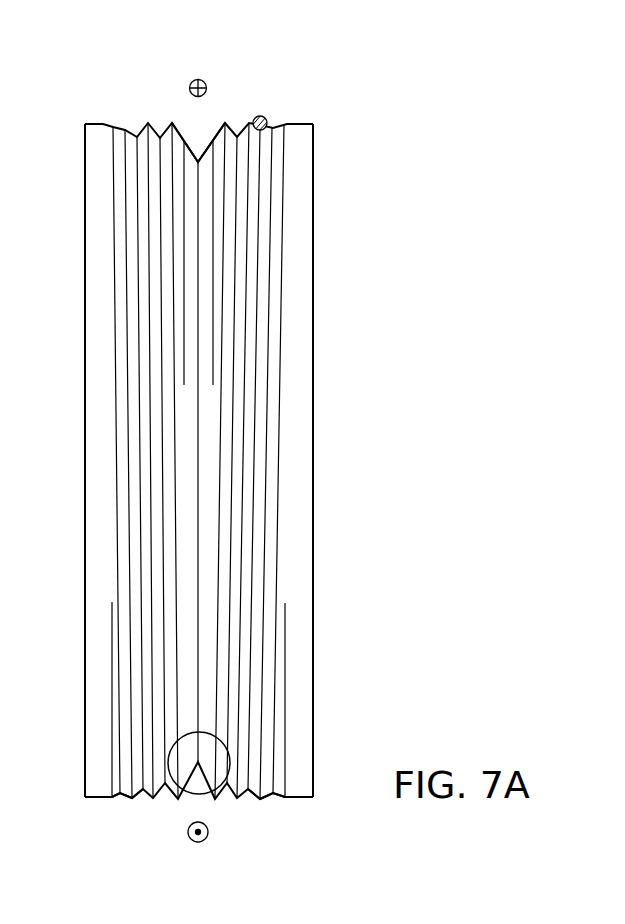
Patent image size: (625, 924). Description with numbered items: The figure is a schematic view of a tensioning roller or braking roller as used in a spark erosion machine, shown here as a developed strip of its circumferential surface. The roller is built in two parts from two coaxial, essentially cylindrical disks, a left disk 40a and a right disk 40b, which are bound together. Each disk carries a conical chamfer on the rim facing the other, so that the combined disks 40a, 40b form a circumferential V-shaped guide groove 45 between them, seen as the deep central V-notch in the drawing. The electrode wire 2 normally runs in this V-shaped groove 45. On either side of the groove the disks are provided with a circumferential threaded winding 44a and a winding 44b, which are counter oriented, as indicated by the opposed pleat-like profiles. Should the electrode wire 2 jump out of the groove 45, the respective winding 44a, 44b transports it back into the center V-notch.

The threaded winding 44a is at (148, 147).
The winding 44b is at (259, 200).
The V-shaped groove 45 is at (193, 131).
The electrode wire 2 is at (216, 110).
The left disk 40a is at (133, 822).
The right disk 40b is at (263, 822).